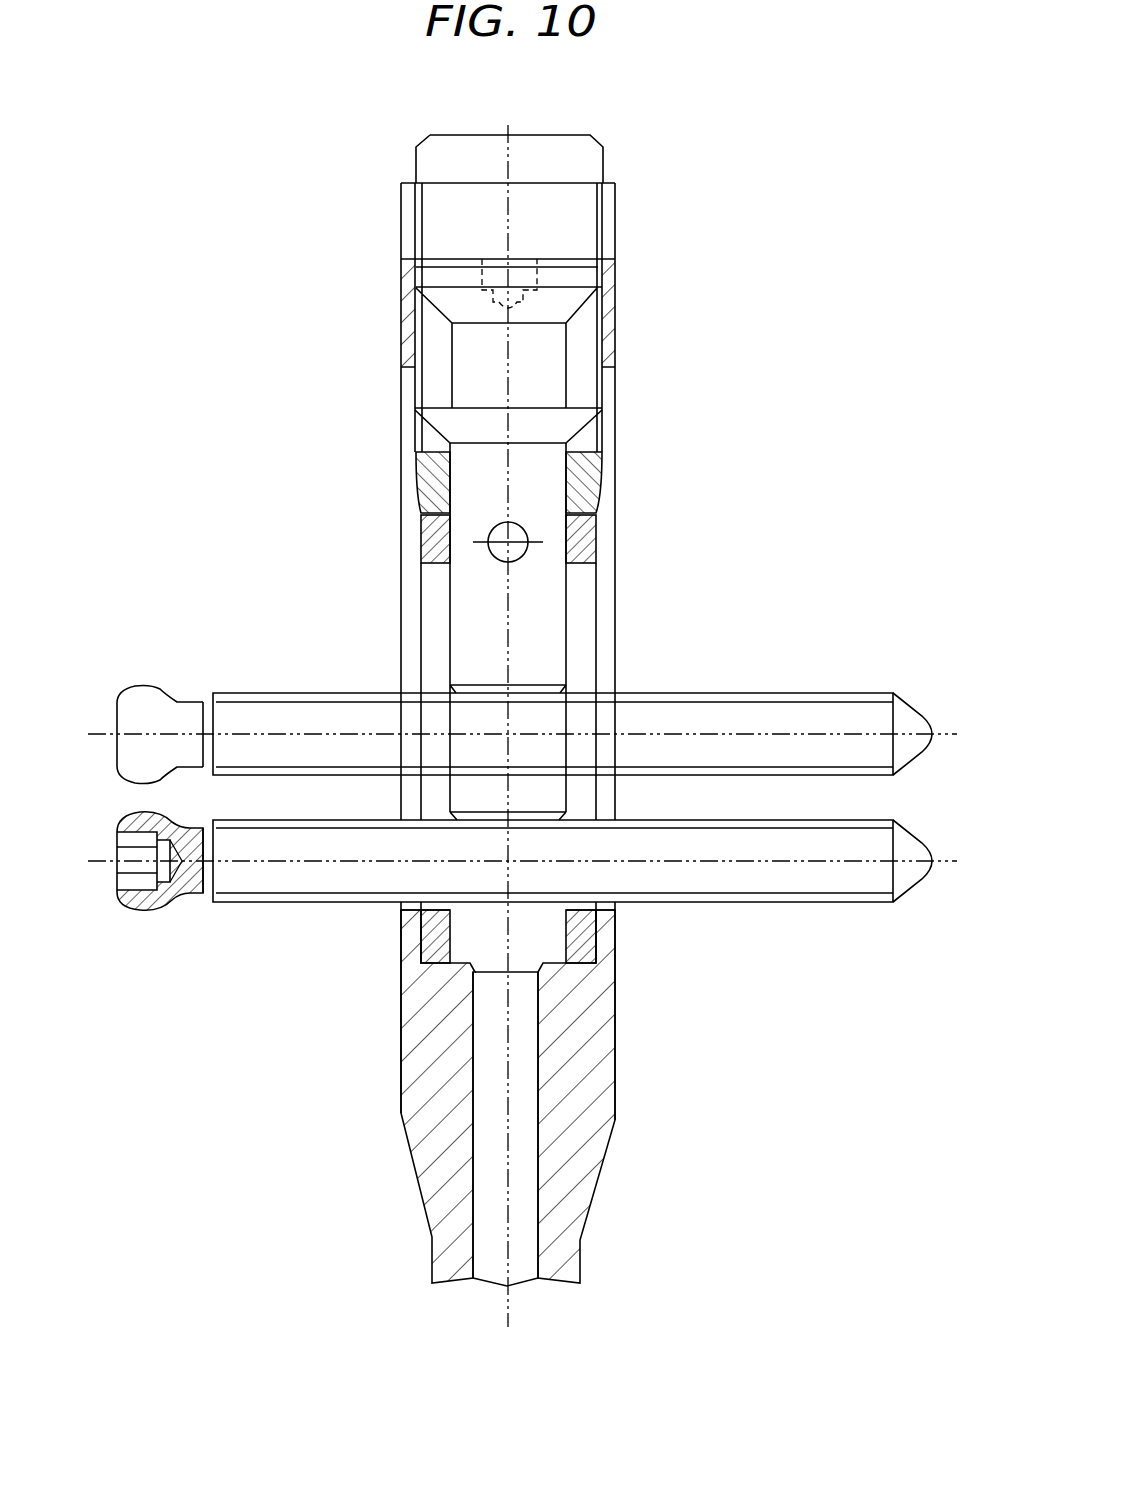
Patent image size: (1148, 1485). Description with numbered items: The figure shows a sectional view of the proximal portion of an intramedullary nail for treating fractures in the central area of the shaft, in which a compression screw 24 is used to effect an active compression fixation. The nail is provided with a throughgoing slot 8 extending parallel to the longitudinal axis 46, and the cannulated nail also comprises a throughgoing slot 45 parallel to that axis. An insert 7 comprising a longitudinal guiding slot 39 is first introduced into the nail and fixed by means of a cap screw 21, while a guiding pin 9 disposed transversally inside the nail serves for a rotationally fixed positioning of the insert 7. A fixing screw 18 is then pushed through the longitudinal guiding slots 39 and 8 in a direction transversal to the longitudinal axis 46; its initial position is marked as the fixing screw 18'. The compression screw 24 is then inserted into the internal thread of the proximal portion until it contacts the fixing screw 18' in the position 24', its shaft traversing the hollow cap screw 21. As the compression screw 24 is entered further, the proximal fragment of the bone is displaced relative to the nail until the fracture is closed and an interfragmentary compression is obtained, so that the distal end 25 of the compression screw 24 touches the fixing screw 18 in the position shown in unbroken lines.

The compression screw position 24' is at (534, 221).
The compression screw 24 is at (539, 317).
The cap screw 21 is at (583, 470).
The guiding pin 9 is at (525, 550).
The longitudinal axis 46 is at (505, 643).
The longitudinal guiding slot 39 is at (430, 680).
The throughgoing slot 8 is at (605, 648).
The initial position of fixing screw 18' is at (522, 718).
The fixing screw 18 is at (522, 884).
The distal end 25 is at (477, 822).
The insert 7 is at (588, 947).
The throughgoing slot 45 is at (523, 1118).